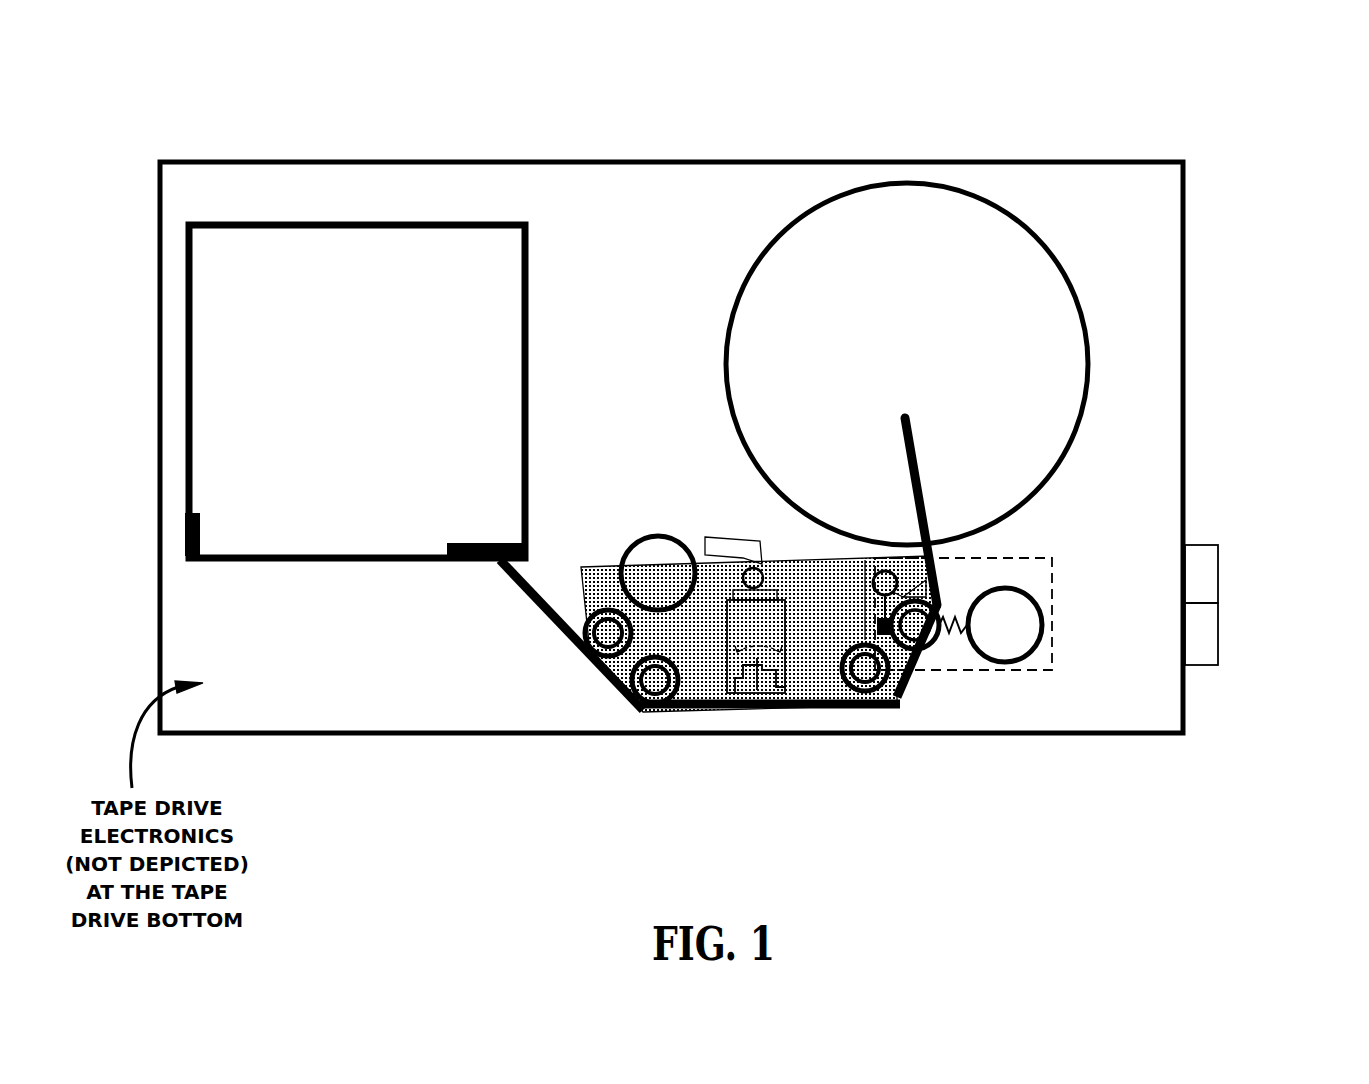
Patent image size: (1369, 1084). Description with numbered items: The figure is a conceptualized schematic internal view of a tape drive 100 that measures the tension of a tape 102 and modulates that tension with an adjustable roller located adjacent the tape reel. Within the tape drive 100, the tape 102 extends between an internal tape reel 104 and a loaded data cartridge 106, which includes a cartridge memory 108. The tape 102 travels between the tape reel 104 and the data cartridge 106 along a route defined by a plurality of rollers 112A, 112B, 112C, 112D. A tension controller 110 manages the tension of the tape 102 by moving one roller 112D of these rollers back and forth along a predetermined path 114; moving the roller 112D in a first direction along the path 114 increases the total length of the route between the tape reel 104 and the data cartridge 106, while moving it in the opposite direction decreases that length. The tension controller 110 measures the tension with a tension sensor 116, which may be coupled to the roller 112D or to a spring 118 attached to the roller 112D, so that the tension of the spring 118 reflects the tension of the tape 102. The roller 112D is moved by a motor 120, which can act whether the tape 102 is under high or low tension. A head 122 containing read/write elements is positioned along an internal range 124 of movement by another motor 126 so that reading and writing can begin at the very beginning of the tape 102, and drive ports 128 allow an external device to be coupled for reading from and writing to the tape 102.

The tape drive 100 is at (1250, 66).
The tape 102 is at (500, 592).
The tape reel 104 is at (905, 212).
The data cartridge 106 is at (352, 265).
The cartridge memory 108 is at (183, 537).
The tension controller 110 is at (1055, 617).
The roller 112A is at (592, 640).
The roller 112B is at (634, 679).
The roller 112C is at (866, 690).
The roller 112D is at (915, 640).
The predetermined path 114 is at (933, 556).
The tension sensor 116 is at (793, 693).
The spring 118 is at (955, 633).
The motor 120 is at (1002, 650).
The head 122 is at (763, 690).
The internal range of movement 124 is at (750, 697).
The motor 126 is at (637, 580).
The drive ports 128 is at (1203, 650).